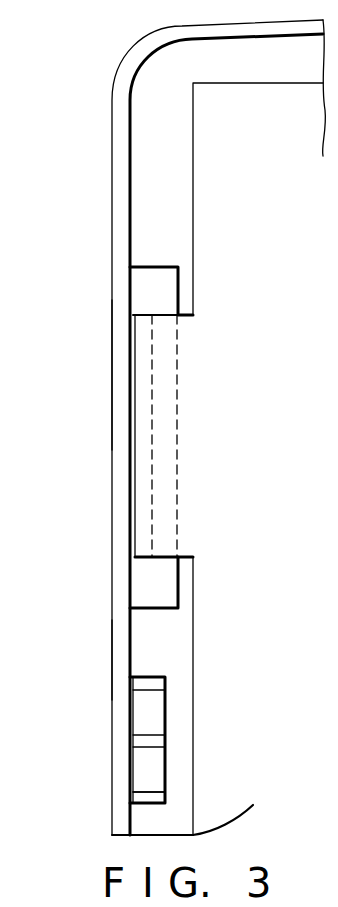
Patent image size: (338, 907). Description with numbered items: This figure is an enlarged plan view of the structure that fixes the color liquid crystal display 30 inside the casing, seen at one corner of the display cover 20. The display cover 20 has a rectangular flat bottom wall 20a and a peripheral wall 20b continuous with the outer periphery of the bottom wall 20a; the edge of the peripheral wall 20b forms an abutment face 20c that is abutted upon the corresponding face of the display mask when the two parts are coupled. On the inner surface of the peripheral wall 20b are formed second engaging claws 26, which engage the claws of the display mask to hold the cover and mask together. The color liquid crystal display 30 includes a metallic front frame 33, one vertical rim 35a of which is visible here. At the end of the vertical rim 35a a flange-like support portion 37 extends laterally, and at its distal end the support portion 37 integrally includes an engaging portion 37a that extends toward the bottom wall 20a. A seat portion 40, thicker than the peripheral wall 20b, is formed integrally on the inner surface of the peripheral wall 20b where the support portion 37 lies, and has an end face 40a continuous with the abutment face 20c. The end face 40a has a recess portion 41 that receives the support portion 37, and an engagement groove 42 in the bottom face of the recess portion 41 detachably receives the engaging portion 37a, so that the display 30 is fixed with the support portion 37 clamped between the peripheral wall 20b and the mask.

The display cover 20 is at (122, 60).
The bottom wall 20a is at (183, 655).
The peripheral wall 20b is at (112, 353).
The abutment face 20c is at (115, 653).
The second engaging claw 26 is at (153, 715).
The color liquid crystal display 30 is at (193, 150).
The front frame 33 is at (207, 213).
The vertical rim 35a is at (210, 765).
The support portion 37 is at (160, 398).
The engaging portion 37a is at (147, 418).
The seat portion 40 is at (142, 578).
The end face 40a is at (165, 295).
The recess portion 41 is at (162, 560).
The engagement groove 42 is at (152, 490).